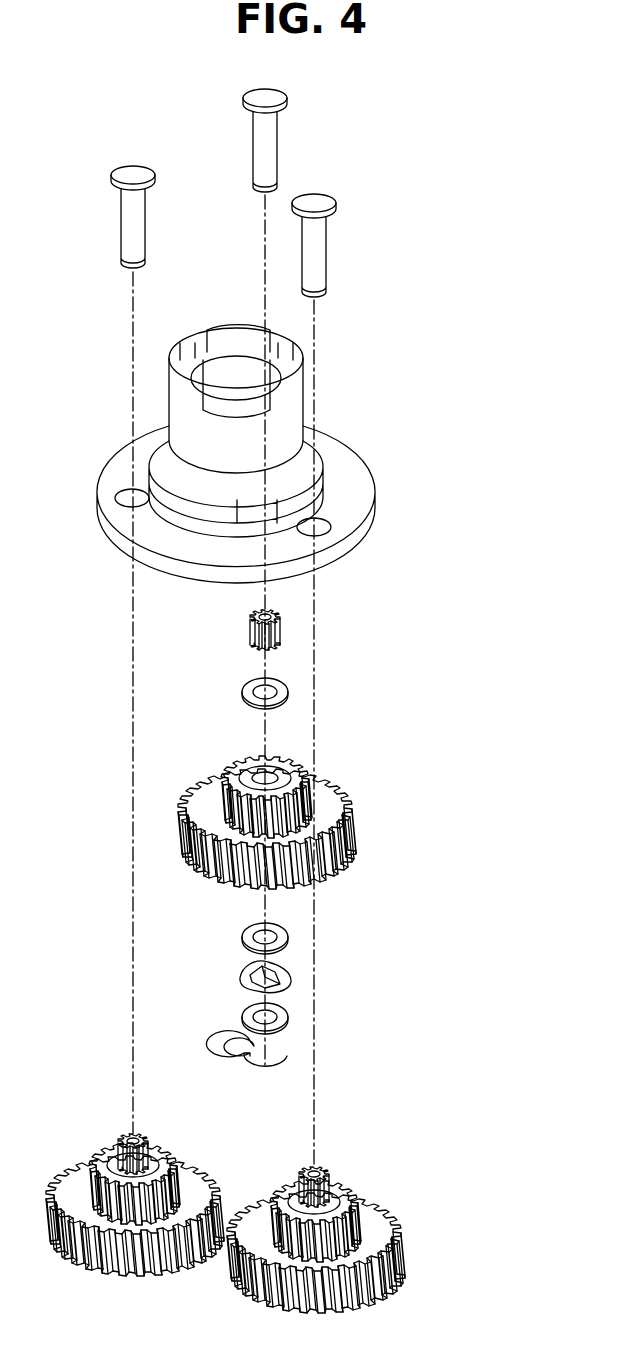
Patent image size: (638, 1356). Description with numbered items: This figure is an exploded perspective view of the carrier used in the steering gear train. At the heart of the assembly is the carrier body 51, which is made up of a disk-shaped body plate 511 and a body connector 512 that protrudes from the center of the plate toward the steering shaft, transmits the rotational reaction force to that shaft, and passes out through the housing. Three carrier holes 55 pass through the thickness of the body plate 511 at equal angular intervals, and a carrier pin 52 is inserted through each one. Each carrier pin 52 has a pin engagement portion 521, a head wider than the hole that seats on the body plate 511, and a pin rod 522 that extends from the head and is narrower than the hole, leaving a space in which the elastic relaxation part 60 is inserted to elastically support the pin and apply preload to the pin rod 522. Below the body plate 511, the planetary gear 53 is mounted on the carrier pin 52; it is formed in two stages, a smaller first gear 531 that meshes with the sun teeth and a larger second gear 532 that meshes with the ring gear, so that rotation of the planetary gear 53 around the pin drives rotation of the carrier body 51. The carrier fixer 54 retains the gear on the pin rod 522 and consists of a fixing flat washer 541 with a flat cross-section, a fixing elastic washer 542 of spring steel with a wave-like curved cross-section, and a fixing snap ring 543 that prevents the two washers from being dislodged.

The carrier body 51 is at (305, 457).
The body plate 511 is at (353, 473).
The body connector 512 is at (283, 418).
The carrier pin 52 is at (288, 185).
The pin engagement portion 521 is at (277, 94).
The pin rod 522 is at (325, 152).
The planetary gear 53 is at (296, 1223).
The first gear 531 is at (485, 1278).
The second gear 532 is at (393, 1238).
The carrier fixer 54 is at (345, 993).
The fixing flat washer 541 is at (286, 934).
The fixing elastic washer 542 is at (288, 978).
The fixing snap ring 543 is at (312, 1048).
The carrier hole 55 is at (125, 498).
The elastic relaxation part 60 is at (282, 632).